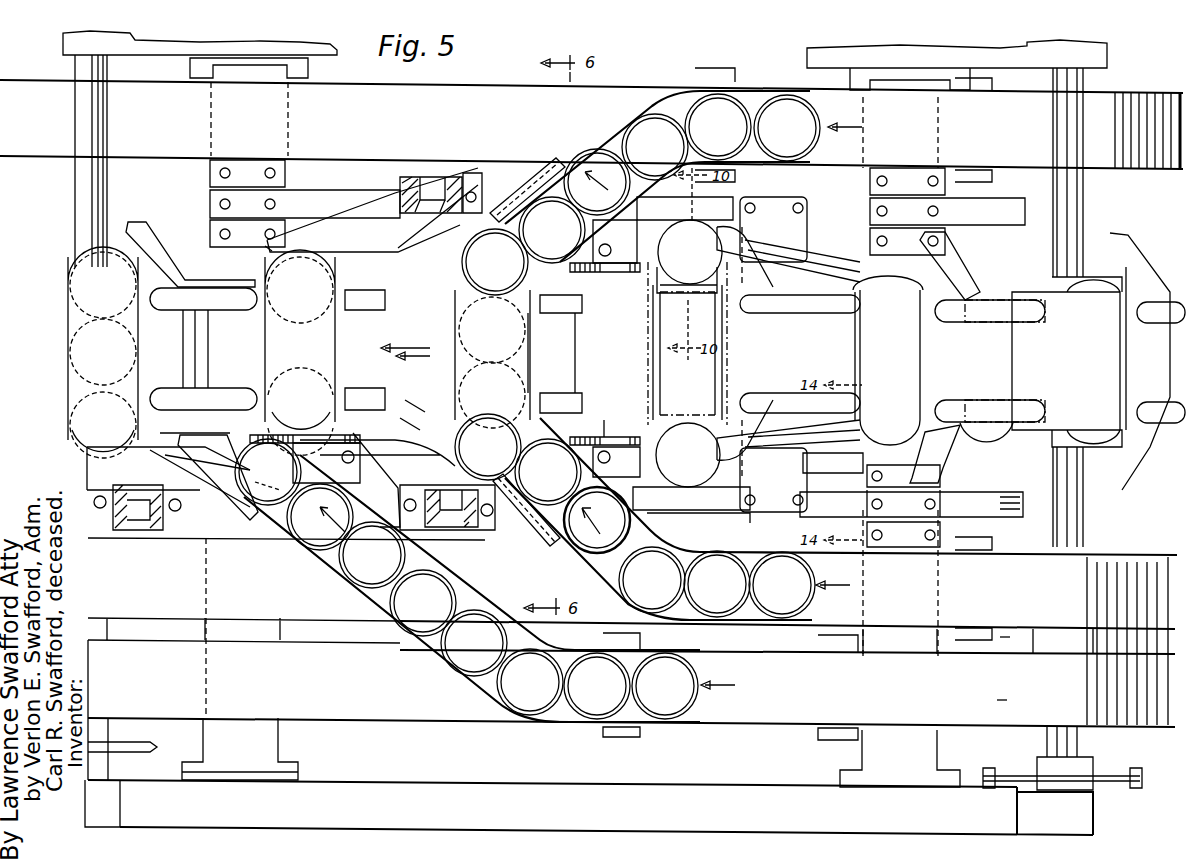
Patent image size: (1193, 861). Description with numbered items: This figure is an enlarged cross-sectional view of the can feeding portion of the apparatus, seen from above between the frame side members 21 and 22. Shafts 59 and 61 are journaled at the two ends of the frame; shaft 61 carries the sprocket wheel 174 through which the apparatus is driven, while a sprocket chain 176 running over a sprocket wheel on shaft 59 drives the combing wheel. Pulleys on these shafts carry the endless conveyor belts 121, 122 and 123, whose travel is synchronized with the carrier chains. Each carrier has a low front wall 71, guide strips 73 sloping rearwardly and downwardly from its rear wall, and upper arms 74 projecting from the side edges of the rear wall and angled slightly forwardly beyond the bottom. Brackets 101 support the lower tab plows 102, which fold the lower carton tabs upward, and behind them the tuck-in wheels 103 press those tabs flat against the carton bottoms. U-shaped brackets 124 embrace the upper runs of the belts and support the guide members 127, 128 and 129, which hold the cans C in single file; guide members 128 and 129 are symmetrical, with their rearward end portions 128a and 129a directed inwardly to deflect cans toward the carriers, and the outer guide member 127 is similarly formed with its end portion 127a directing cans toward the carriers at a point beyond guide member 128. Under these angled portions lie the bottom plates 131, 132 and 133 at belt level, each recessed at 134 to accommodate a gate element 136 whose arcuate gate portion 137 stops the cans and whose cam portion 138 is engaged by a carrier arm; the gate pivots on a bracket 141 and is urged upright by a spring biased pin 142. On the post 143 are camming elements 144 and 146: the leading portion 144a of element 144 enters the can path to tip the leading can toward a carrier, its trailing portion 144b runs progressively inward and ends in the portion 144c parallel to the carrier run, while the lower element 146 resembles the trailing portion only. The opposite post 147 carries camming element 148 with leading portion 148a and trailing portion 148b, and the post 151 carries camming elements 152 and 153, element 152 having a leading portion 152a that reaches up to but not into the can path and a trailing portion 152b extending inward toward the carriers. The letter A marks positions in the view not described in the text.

The side member 22 is at (142, 54).
The side member 21 is at (668, 800).
The shaft 59 is at (1090, 200).
The shaft 61 is at (108, 190).
The front wall 71 is at (650, 362).
The guide strips 73 is at (800, 318).
The upper arm 74 is at (150, 245).
The bracket 101 is at (790, 243).
The lower tab plow 102 is at (828, 262).
The tuck-in wheel 103 is at (689, 353).
The conveyor belt 121 is at (1010, 686).
The conveyor belt 122 is at (1013, 609).
The conveyor belt 123 is at (1105, 110).
The U-shaped bracket 124 is at (785, 165).
The guide member 127 is at (960, 718).
The angularly directed end portion 127a is at (300, 535).
The guide member 128 is at (1040, 625).
The angularly directed end portion 128a is at (560, 555).
The guide member 129 is at (1043, 155).
The angularly directed end portion 129a is at (590, 150).
The plate 131 is at (325, 560).
The plate 132 is at (640, 535).
The plate 133 is at (691, 353).
The recess 134 is at (410, 351).
The gate element 136 is at (312, 430).
The gate portion 137 is at (515, 270).
The cam portion 138 is at (588, 280).
The bracket 141 is at (646, 500).
The spring biased pin 142 is at (613, 421).
The post 143 is at (455, 515).
The upper camming element 144 is at (420, 460).
The leading portion 144a is at (525, 525).
The trailing portion 144b is at (413, 416).
The portion parallel to the run of the carriers 144c is at (417, 399).
The lower camming element 146 is at (488, 447).
The post 147 is at (450, 177).
The upper camming element 148 is at (395, 249).
The leading portion 148a is at (522, 190).
The trailing portion 148b is at (270, 252).
The post 151 is at (140, 522).
The upper camming element 152 is at (286, 486).
The leading portion 152a is at (265, 481).
The trailing portion 152b is at (103, 425).
The lower camming element 153 is at (203, 522).
The sprocket wheel 174 is at (145, 745).
The sprocket chain 176 is at (1130, 785).
The package A is at (268, 328).
The can C is at (718, 100).